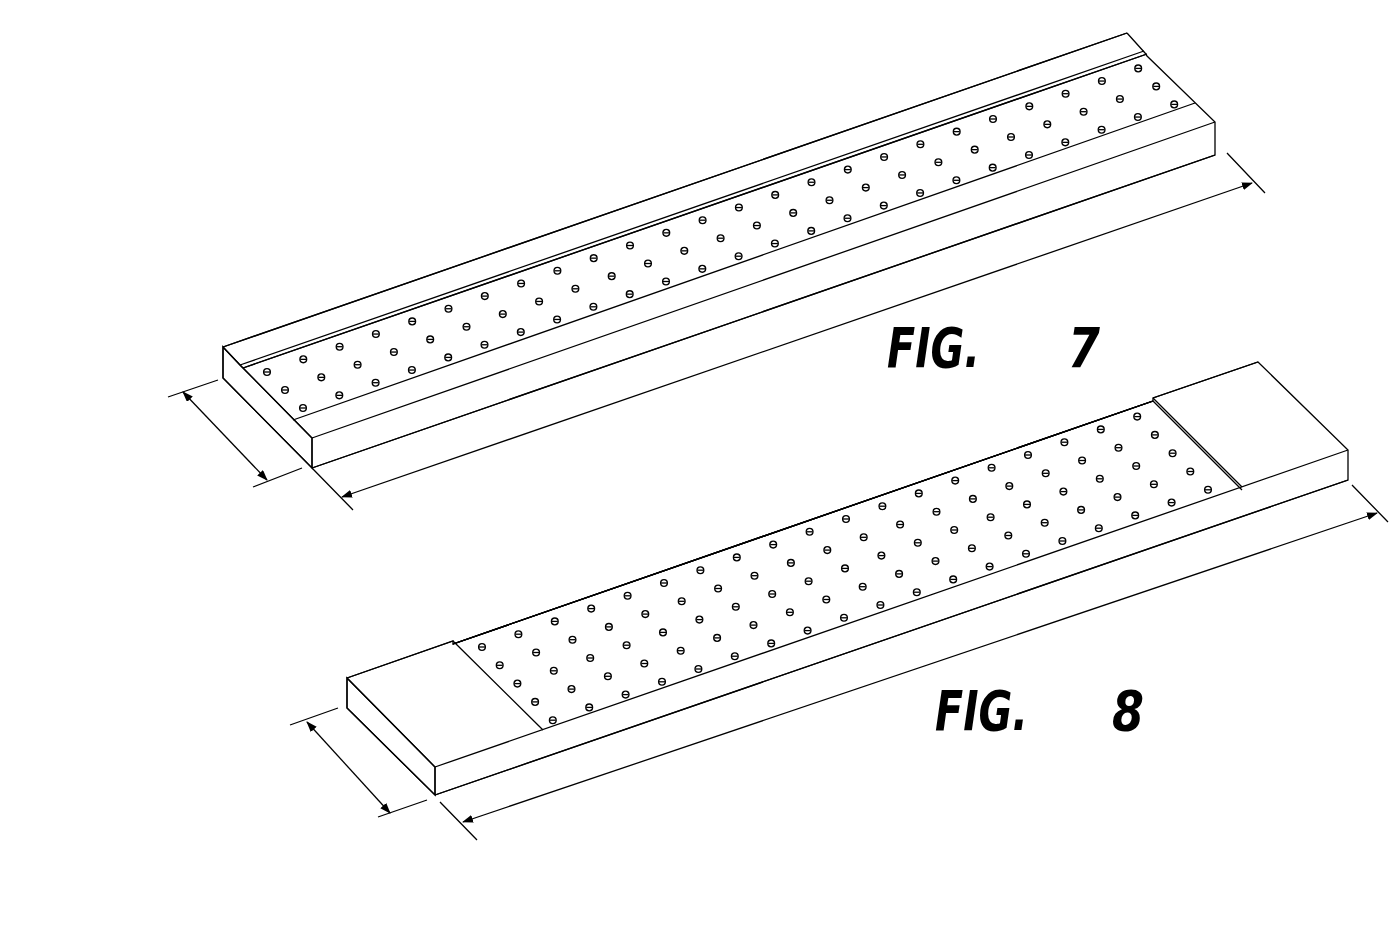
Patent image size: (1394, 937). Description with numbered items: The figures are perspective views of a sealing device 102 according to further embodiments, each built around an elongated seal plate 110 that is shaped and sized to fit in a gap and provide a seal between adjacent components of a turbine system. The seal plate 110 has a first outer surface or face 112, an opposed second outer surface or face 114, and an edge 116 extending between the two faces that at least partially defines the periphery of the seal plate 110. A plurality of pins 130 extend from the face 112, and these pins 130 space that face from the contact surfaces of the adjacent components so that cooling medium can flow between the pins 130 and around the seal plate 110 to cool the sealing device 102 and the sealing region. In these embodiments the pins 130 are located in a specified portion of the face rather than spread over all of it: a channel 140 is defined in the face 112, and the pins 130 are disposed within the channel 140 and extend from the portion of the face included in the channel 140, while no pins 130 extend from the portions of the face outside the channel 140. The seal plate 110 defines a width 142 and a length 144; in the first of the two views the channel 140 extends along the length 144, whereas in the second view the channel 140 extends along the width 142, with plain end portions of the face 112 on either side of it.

In FIG. 7, the sealing device 102 is at (455, 230).
In FIG. 8, the sealing device 102 is at (570, 568).
In FIG. 7, the seal plate 110 is at (387, 288).
In FIG. 8, the seal plate 110 is at (530, 612).
In FIG. 7, the first outer surface or face 112 is at (325, 355).
In FIG. 8, the first outer surface or face 112 is at (725, 578).
In FIG. 7, the second outer surface or face 114 is at (652, 352).
In FIG. 8, the second outer surface or face 114 is at (797, 673).
In FIG. 7, the edge 116 is at (300, 438).
In FIG. 8, the edge 116 is at (380, 725).
In FIG. 7, the pins 130 is at (684, 246).
In FIG. 8, the pins 130 is at (910, 482).
In FIG. 7, the channel 140 is at (1142, 80).
In FIG. 8, the channel 140 is at (1017, 462).
In FIG. 7, the width 142 is at (212, 426).
In FIG. 8, the width 142 is at (352, 773).
In FIG. 7, the length 144 is at (590, 412).
In FIG. 8, the length 144 is at (726, 738).